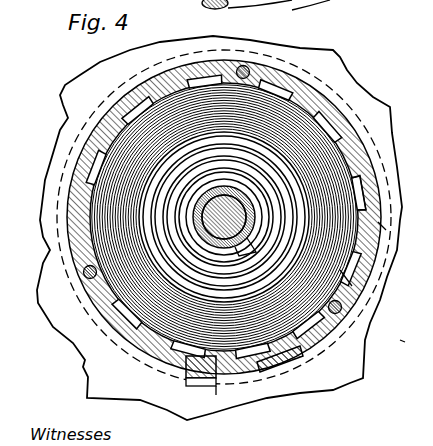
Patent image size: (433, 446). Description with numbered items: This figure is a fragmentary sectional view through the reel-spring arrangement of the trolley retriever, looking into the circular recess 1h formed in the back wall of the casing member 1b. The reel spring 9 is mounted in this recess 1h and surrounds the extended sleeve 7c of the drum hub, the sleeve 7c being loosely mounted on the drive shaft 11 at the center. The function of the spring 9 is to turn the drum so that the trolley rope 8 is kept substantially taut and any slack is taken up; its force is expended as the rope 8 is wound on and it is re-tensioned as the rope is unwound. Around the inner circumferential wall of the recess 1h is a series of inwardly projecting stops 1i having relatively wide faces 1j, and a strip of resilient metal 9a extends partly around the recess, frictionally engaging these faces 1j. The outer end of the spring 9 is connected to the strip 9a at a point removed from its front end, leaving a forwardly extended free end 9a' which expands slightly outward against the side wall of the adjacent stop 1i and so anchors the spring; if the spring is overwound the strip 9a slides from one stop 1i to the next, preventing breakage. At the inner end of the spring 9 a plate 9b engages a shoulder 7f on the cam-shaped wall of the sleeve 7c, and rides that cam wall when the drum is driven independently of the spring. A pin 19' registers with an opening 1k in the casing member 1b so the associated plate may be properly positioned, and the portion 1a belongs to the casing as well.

The casing portion 1a is at (266, 12).
The casing member 1b is at (343, 88).
The circular recess 1h is at (353, 200).
The stops 1i is at (381, 220).
The faces of the stops 1j is at (113, 137).
The opening or recess 1k is at (216, 395).
The sleeve 7c is at (192, 212).
The shoulder 7f is at (250, 223).
The trolley rope 8 is at (410, 348).
The reel spring 9 is at (178, 122).
The strip of resilient metal 9a is at (375, 286).
The free end of the strip 9a' is at (285, 385).
The plate 9b is at (247, 237).
The shaft 11 is at (217, 200).
The pin or projection 19' is at (197, 388).